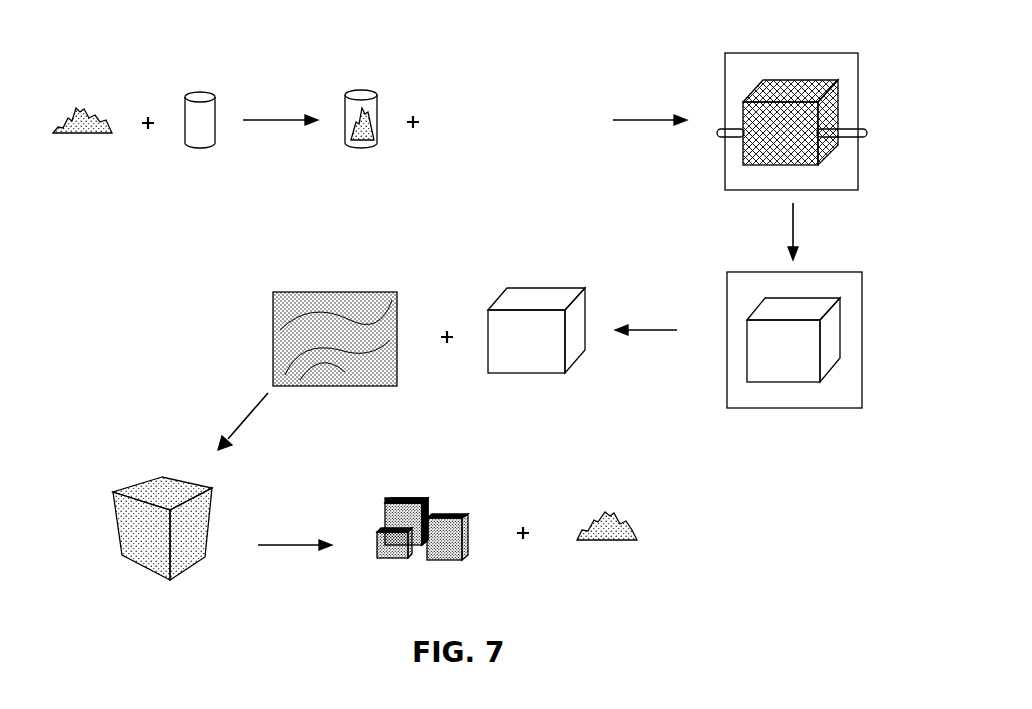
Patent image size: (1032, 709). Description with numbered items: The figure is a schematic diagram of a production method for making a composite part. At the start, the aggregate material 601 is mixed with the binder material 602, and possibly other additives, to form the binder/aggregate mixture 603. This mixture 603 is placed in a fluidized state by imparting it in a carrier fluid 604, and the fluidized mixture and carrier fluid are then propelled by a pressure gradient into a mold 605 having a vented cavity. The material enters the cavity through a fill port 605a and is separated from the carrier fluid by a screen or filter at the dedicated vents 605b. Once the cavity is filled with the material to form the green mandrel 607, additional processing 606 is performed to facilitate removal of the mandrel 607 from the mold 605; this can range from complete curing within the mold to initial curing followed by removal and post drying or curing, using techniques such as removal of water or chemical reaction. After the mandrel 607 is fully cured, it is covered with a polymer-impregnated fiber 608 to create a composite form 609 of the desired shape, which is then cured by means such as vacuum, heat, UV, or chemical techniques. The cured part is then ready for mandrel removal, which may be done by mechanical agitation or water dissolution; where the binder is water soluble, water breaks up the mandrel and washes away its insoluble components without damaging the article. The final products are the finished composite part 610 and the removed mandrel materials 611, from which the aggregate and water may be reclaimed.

The aggregate material 601 is at (80, 134).
The binder material 602 is at (193, 145).
The binder/aggregate mixture 603 is at (363, 144).
The carrier fluid 604 is at (530, 137).
The mold 605 is at (785, 126).
The fill port 605a is at (740, 138).
The dedicated vents 605b is at (845, 138).
The additional processing 606 is at (785, 383).
The green mandrel 607 is at (585, 320).
The polymer-impregnated fiber 608 is at (335, 290).
The composite form 609 is at (213, 515).
The composite part 610 is at (440, 562).
The removed mandrel materials 611 is at (613, 541).